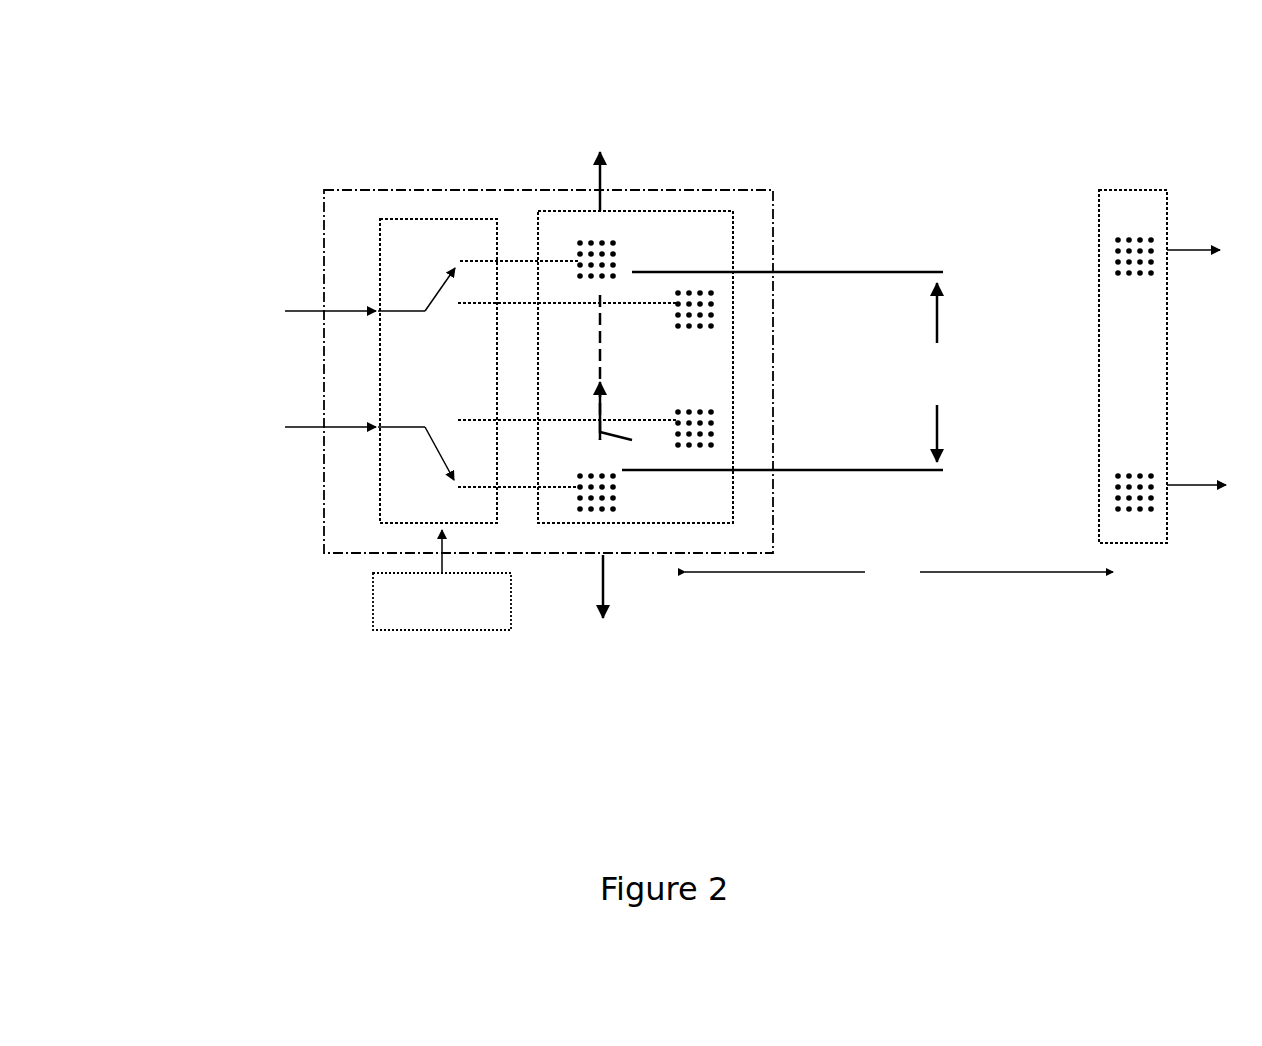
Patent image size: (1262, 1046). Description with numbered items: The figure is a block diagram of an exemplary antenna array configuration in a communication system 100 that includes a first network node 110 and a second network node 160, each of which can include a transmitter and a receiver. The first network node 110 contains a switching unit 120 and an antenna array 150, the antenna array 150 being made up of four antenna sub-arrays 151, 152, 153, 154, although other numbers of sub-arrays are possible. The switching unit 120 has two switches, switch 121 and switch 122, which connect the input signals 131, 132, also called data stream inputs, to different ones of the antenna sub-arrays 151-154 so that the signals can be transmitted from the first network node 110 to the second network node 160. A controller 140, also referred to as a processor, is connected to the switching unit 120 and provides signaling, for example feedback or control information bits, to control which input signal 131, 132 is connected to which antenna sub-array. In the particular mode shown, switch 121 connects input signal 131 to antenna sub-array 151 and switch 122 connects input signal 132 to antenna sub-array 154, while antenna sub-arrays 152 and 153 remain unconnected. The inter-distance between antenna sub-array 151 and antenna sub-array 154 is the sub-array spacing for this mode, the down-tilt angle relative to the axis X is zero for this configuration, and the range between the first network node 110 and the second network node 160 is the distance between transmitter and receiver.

The communication system 100 is at (566, 82).
The first network node 110 is at (357, 181).
The switching unit 120 is at (378, 247).
The switch 121 is at (430, 300).
The switch 122 is at (430, 445).
The input signal 131 is at (300, 313).
The input signal 132 is at (300, 430).
The controller 140 is at (465, 633).
The antenna array 150 is at (690, 210).
The antenna sub-array 151 is at (635, 245).
The antenna sub-array 152 is at (730, 320).
The antenna sub-array 153 is at (730, 427).
The antenna sub-array 154 is at (633, 489).
The second network node 160 is at (1150, 190).